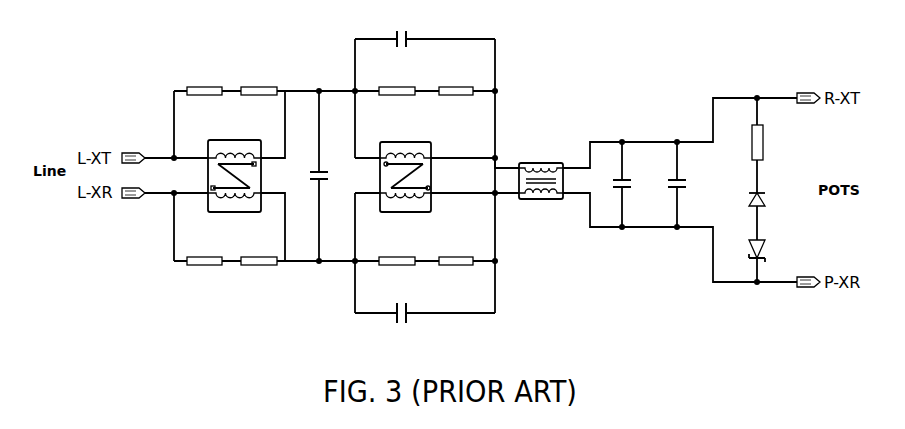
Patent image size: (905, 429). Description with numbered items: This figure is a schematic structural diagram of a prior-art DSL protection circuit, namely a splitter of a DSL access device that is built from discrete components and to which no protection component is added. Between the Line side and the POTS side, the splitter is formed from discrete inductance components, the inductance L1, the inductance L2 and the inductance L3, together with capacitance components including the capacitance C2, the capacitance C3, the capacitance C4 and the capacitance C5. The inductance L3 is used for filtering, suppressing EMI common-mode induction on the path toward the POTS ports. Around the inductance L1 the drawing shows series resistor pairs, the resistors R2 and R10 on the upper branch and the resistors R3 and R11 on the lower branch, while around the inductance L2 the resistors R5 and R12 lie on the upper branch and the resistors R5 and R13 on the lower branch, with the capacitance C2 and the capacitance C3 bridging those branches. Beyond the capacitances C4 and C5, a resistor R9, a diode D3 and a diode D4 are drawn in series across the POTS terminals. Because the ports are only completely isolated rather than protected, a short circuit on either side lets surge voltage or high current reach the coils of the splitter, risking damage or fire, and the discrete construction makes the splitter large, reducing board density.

The resistor R2 is at (204, 81).
The resistor R10 is at (259, 81).
The resistor R3 is at (204, 252).
The resistor R11 is at (259, 252).
The discrete inductance L1 is at (234, 166).
The capacitance component C2 is at (391, 43).
The resistor R5 is at (397, 166).
The resistor R12 is at (456, 81).
The resistor R13 is at (456, 252).
The discrete inductance L2 is at (405, 166).
The capacitance component C3 is at (398, 302).
The L3 inductance L3 is at (541, 170).
The capacitance component C4 is at (611, 183).
The capacitance component C5 is at (666, 183).
The resistor R9 is at (771, 142).
The diode D3 is at (771, 197).
The zener diode D4 is at (745, 250).